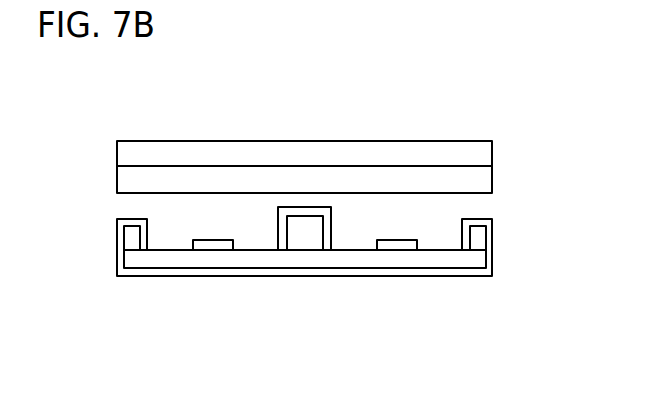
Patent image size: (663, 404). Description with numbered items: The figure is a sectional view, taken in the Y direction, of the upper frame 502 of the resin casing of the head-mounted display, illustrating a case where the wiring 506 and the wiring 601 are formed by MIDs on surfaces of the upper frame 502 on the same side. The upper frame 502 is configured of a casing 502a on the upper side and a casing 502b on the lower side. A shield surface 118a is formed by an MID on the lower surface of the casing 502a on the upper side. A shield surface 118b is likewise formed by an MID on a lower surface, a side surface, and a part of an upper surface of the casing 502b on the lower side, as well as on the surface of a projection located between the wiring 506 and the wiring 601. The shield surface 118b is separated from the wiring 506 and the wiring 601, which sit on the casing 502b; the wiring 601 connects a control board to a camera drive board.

The upper frame 502 is at (93, 141).
The casing on the upper side 502a is at (492, 145).
The shield surface 118a is at (492, 180).
The shield surface 118b is at (492, 253).
The casing on the lower side 502b is at (453, 262).
The wiring 601 is at (212, 244).
The wiring 506 is at (397, 245).